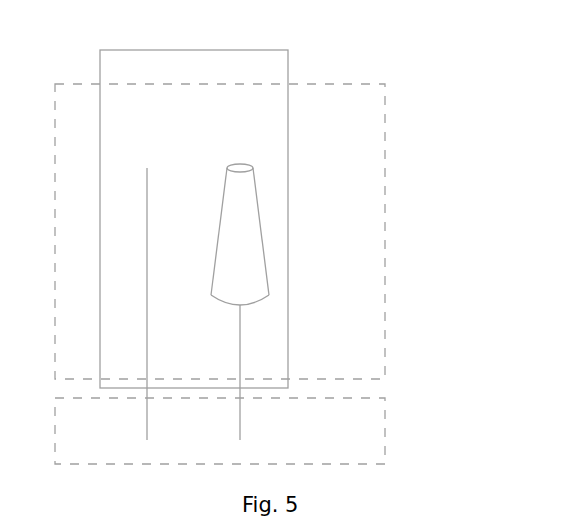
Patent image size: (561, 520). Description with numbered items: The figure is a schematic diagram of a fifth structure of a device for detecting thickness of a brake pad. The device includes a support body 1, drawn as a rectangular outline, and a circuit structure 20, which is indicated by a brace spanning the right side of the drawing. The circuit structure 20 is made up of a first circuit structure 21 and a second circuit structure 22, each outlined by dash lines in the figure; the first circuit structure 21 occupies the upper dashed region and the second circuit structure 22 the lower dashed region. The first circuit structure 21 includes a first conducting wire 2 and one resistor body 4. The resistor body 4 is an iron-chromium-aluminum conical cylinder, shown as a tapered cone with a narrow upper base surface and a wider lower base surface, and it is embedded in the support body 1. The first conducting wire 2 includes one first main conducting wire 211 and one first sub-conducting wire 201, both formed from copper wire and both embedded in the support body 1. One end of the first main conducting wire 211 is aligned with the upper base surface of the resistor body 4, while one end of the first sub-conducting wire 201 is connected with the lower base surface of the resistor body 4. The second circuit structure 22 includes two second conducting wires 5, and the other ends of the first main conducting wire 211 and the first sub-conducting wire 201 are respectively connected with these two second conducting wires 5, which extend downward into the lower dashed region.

The support body 1 is at (288, 50).
The first conducting wire 2 is at (79, 304).
The resistor body 4 is at (238, 170).
The second conducting wire 5 is at (147, 421).
The circuit structure 20 is at (467, 224).
The first circuit structure 21 is at (385, 232).
The second circuit structure 22 is at (385, 426).
The first sub-conducting wire 201 is at (240, 325).
The first main conducting wire 211 is at (147, 340).